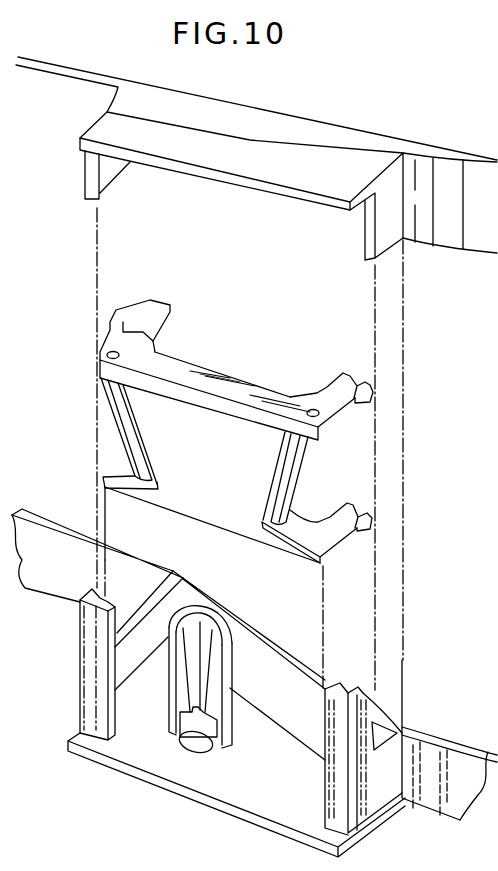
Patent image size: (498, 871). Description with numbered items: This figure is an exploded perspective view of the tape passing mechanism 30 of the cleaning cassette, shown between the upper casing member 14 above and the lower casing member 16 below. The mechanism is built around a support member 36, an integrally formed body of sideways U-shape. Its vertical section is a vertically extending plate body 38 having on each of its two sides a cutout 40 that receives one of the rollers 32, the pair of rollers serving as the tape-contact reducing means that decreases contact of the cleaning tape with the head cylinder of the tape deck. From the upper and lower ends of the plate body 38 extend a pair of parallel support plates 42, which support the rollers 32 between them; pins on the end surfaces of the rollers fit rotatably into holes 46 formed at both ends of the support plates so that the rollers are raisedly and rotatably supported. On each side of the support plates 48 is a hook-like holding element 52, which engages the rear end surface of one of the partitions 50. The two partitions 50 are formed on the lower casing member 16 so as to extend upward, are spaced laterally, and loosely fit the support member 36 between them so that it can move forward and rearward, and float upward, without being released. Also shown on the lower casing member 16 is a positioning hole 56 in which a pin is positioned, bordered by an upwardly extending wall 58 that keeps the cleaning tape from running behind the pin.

The upper casing member 14 is at (473, 236).
The lower casing member 16 is at (417, 787).
The tape passing mechanism 30 is at (261, 796).
The rollers 32 is at (123, 423).
The support member 36 is at (195, 343).
The plate body 38 is at (227, 512).
The cutout 40 is at (128, 460).
The support plates 42 is at (230, 383).
The holes 46 is at (107, 351).
The support plates 48 is at (297, 533).
The partitions 50 is at (90, 665).
The hook-like holding element 52 is at (132, 310).
The positioning hole 56 is at (208, 748).
The upwardly extending wall 58 is at (232, 657).